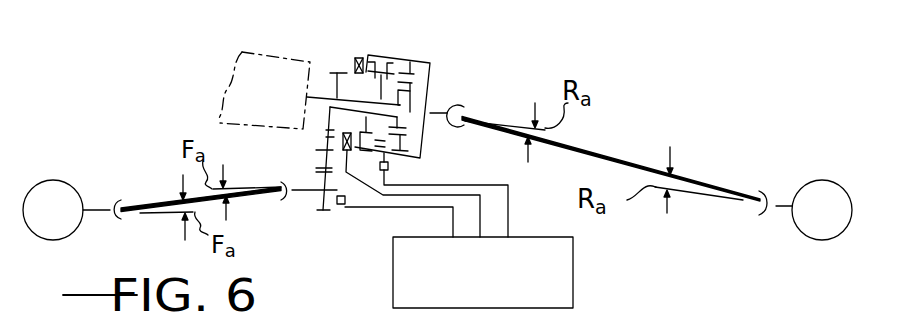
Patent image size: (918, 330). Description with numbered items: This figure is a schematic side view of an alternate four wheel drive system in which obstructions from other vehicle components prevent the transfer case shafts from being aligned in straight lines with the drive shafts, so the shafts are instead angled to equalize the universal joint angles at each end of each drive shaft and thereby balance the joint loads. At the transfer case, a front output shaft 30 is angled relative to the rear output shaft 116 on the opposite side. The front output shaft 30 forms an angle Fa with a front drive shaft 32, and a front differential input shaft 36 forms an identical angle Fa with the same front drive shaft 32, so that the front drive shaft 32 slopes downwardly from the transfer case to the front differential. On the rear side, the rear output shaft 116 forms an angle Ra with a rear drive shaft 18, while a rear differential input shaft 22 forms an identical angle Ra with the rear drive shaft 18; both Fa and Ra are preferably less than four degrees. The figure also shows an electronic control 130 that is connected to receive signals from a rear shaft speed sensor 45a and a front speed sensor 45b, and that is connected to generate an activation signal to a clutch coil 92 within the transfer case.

The front differential input shaft 36 is at (100, 211).
The front drive shaft 32 is at (151, 203).
The front output shaft 30 is at (305, 190).
The clutch coil 92 is at (359, 57).
The rear shaft speed sensor 45a is at (388, 167).
The front speed sensor 45b is at (345, 200).
The electronic control 130 is at (573, 268).
The output coupling 116 is at (443, 109).
The rear drive shaft 18 is at (622, 162).
The rear differential input shaft 22 is at (782, 200).